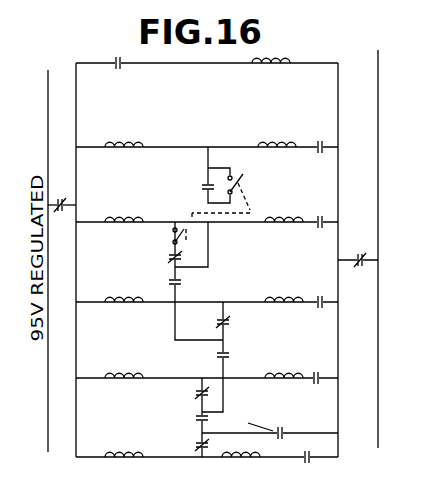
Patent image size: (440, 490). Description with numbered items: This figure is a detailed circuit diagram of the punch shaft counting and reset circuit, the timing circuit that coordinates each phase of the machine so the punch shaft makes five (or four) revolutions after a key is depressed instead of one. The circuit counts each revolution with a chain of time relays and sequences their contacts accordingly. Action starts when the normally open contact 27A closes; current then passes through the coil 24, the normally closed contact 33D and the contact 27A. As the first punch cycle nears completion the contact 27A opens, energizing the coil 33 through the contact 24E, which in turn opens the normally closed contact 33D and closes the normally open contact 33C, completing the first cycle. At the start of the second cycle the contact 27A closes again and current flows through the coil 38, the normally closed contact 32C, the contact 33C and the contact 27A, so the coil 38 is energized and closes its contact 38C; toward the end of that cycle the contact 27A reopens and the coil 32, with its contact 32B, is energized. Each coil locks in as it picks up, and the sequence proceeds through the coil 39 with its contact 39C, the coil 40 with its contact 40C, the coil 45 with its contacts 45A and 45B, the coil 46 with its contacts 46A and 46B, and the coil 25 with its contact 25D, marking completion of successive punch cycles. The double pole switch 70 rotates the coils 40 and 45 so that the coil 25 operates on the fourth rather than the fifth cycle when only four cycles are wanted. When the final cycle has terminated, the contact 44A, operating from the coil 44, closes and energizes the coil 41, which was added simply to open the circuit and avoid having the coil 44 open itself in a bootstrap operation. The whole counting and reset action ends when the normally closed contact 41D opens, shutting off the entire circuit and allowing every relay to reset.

The coil 24 is at (134, 440).
The contact 24E is at (311, 461).
The coil 25 is at (137, 145).
The contact 25D is at (306, 152).
The normally open contact 27A is at (258, 422).
The coil 32 is at (288, 381).
The contact 32B is at (230, 355).
The normally closed contact 32C is at (196, 392).
The coil 33 is at (256, 460).
The normally open contact 33C is at (196, 418).
The normally closed contact 33D is at (197, 443).
The coil 38 is at (134, 375).
The contact 38C is at (318, 382).
The coil 39 is at (135, 306).
The contact 39C is at (322, 306).
The coil 40 is at (127, 219).
The contact 40C is at (307, 233).
The coil 41 is at (281, 67).
The normally closed contact 41D is at (364, 266).
The coil 44 is at (277, 145).
The contact 44A is at (123, 67).
The coil 45 is at (283, 227).
The contact 45A is at (201, 180).
The contact 45B is at (169, 257).
The coil 46 is at (292, 299).
The contact 46A is at (182, 283).
The contact 46B is at (246, 321).
The double pole switch 70 is at (171, 237).